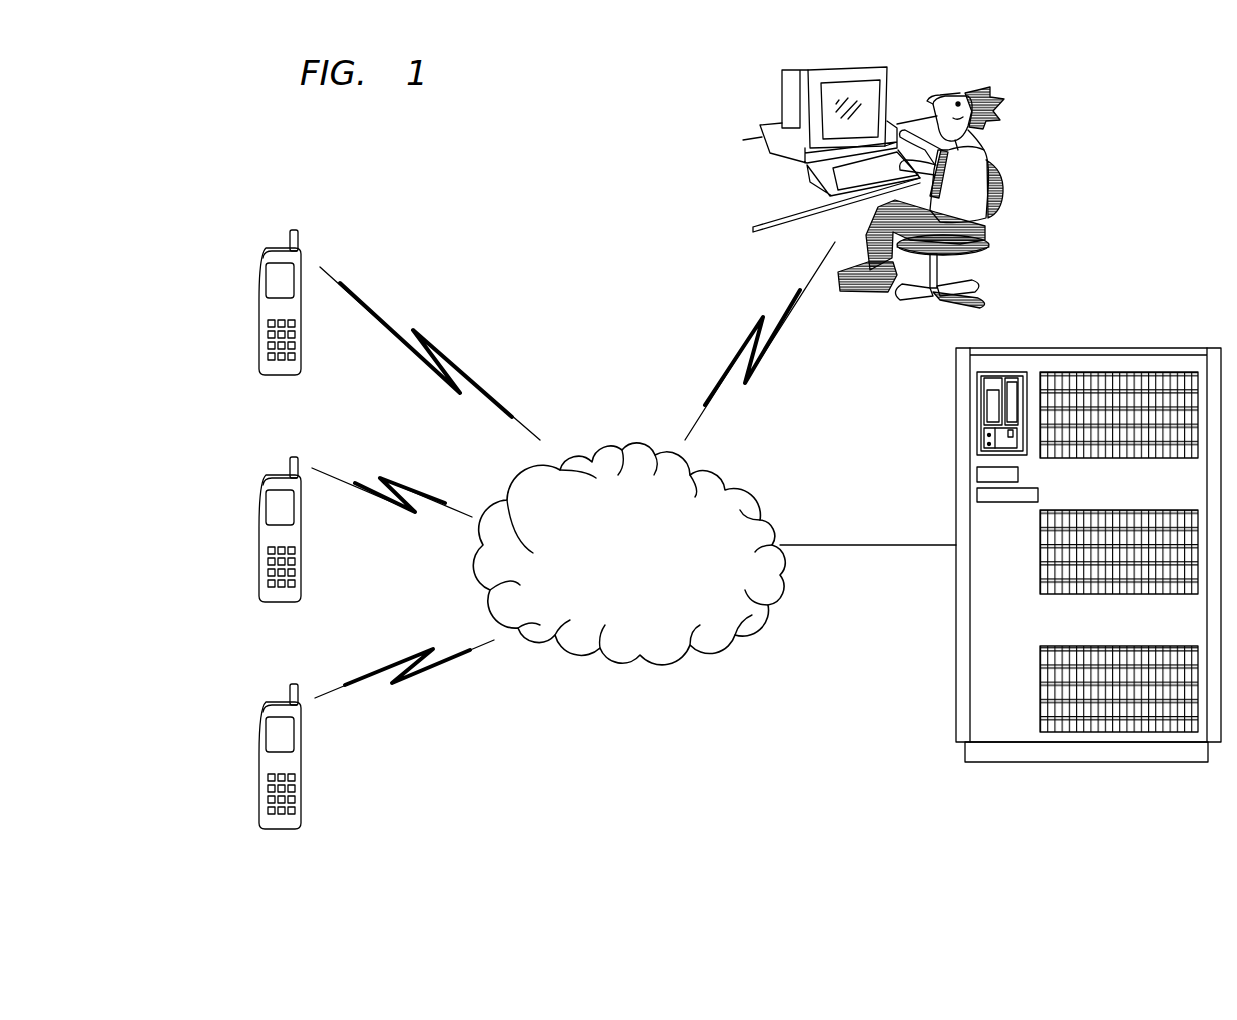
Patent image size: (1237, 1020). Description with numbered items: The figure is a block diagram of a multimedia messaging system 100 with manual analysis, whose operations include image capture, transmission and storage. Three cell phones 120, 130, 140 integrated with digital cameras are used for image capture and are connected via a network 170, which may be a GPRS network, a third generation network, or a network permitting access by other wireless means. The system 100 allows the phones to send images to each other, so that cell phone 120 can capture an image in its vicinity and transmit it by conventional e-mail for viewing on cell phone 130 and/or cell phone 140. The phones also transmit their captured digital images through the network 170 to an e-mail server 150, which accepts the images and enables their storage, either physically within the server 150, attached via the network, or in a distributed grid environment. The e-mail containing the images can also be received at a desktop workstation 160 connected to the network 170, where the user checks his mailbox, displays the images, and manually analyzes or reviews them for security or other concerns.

The multimedia messaging system 100 is at (414, 177).
The cell phone 120 is at (259, 286).
The cell phone 130 is at (259, 513).
The cell phone 140 is at (259, 740).
The e-mail server 150 is at (1064, 348).
The desktop workstation 160 is at (1005, 184).
The network 170 is at (610, 443).